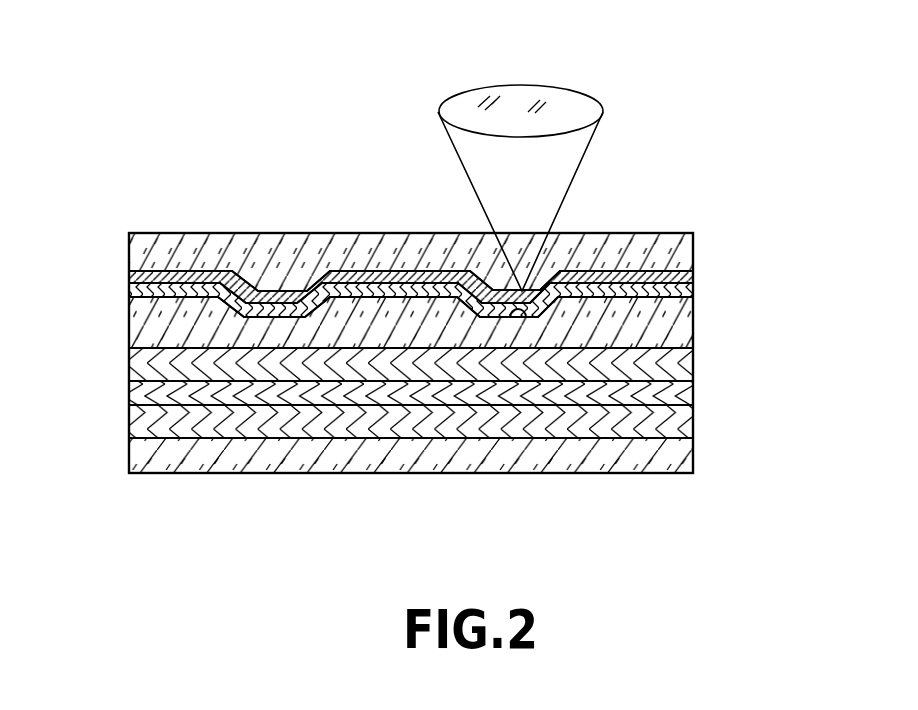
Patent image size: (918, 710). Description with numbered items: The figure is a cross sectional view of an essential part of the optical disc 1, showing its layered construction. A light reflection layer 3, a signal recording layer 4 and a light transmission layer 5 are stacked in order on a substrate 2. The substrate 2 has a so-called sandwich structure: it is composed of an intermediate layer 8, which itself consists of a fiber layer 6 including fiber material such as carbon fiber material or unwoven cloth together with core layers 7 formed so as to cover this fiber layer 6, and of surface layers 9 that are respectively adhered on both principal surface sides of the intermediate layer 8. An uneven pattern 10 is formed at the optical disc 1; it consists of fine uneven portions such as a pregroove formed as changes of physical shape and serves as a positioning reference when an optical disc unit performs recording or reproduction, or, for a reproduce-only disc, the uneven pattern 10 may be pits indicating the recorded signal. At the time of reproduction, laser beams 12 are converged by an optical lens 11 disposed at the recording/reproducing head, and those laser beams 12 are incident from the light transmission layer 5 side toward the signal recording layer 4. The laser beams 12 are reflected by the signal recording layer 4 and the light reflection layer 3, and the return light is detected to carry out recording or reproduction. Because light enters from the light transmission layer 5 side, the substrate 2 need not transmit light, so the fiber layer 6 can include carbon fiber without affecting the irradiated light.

The optical disc 1 is at (266, 211).
The substrate 2 is at (488, 387).
The light reflection layer 3 is at (683, 292).
The signal recording layer 4 is at (683, 278).
The light transmission layer 5 is at (683, 250).
The fiber layer 6 is at (439, 388).
The core layers 7 is at (683, 366).
The intermediate layer 8 is at (463, 388).
The surface layers 9 is at (683, 325).
The uneven pattern 10 is at (524, 318).
The optical lens 11 is at (567, 108).
The laser beams 12 is at (560, 176).